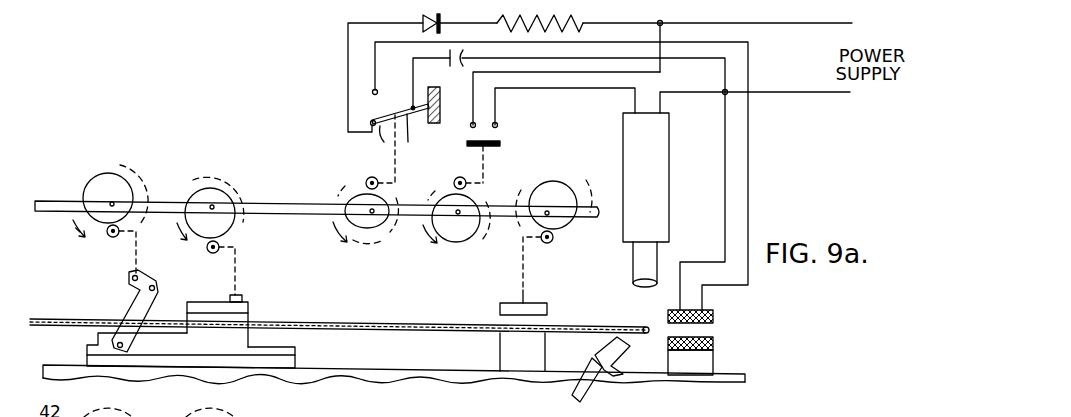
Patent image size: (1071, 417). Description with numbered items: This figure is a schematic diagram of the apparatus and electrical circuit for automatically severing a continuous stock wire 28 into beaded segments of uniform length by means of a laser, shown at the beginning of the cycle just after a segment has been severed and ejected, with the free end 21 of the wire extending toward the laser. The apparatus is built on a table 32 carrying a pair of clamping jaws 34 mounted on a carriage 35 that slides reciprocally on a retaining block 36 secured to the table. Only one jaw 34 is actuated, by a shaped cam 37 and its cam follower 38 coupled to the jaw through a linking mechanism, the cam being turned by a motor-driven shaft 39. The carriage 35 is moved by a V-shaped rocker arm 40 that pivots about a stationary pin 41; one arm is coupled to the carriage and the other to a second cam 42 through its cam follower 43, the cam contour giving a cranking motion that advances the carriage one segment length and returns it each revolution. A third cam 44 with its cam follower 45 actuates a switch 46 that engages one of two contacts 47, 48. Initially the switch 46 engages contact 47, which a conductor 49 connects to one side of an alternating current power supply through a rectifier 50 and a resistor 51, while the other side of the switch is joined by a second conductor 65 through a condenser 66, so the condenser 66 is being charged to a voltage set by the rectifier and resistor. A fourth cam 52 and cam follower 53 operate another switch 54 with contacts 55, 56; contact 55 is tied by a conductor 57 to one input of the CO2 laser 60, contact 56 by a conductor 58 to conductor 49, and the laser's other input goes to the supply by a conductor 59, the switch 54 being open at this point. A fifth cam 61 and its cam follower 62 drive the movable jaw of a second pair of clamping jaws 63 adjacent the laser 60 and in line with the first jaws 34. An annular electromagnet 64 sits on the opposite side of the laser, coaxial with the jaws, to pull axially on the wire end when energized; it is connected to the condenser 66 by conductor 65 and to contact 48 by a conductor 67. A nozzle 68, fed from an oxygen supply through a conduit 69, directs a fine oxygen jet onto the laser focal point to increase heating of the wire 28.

The strip end 21 is at (645, 325).
The stock wire 28 is at (402, 323).
The table 32 is at (737, 374).
The clamping jaws 34 is at (205, 313).
The carriage 35 is at (232, 345).
The base block 36 is at (283, 353).
The cam 37 is at (198, 188).
The cam follower 38 is at (222, 247).
The shaft 39 is at (298, 201).
The rocker arm 40 is at (130, 306).
The stationary pin 41 is at (157, 286).
The second cam 42 is at (106, 181).
The cam follower 43 is at (112, 240).
The third cam 44 is at (370, 225).
The cam follower 45 is at (367, 177).
The switch 46 is at (413, 136).
The contact 47 is at (401, 122).
The contact 48 is at (377, 90).
The conductor 49 is at (348, 82).
The rectifier 50 is at (423, 19).
The resistor 51 is at (578, 24).
The fourth cam 52 is at (463, 235).
The cam follower 53 is at (463, 179).
The switch 54 is at (500, 146).
The contact 55 is at (498, 124).
The contact 56 is at (470, 126).
The conductor 57 is at (560, 88).
The conductor 58 is at (662, 72).
The conductor 59 is at (792, 93).
The CO2 laser 60 is at (623, 157).
The fifth cam 61 is at (570, 227).
The cam follower 62 is at (551, 243).
The second pair of clamping jaws 63 is at (535, 340).
The annular electromagnet 64 is at (715, 342).
The conductor 65 is at (750, 60).
The condenser 66 is at (455, 71).
The conductor 67 is at (748, 208).
The nozzle 68 is at (603, 347).
The conduit 69 is at (590, 392).